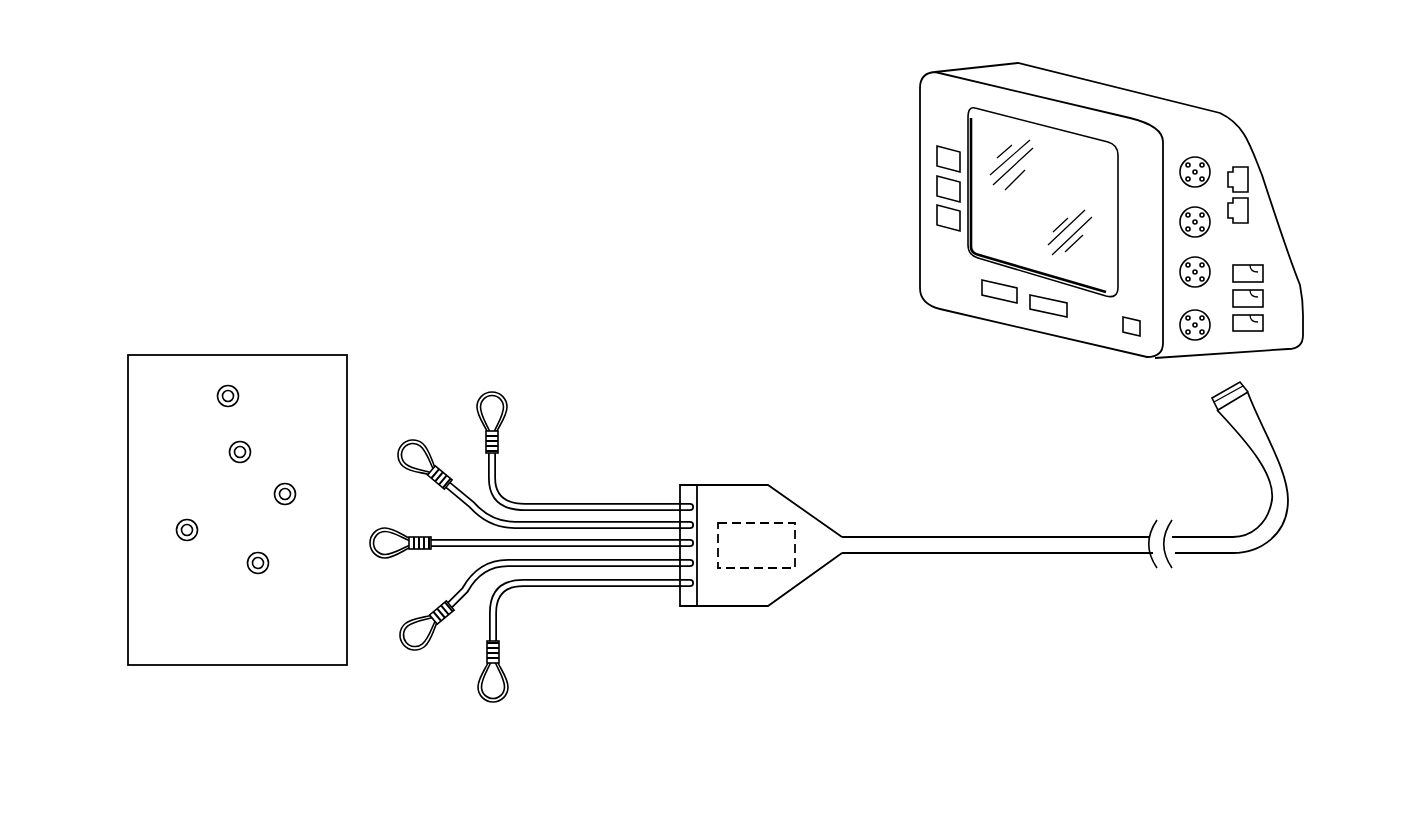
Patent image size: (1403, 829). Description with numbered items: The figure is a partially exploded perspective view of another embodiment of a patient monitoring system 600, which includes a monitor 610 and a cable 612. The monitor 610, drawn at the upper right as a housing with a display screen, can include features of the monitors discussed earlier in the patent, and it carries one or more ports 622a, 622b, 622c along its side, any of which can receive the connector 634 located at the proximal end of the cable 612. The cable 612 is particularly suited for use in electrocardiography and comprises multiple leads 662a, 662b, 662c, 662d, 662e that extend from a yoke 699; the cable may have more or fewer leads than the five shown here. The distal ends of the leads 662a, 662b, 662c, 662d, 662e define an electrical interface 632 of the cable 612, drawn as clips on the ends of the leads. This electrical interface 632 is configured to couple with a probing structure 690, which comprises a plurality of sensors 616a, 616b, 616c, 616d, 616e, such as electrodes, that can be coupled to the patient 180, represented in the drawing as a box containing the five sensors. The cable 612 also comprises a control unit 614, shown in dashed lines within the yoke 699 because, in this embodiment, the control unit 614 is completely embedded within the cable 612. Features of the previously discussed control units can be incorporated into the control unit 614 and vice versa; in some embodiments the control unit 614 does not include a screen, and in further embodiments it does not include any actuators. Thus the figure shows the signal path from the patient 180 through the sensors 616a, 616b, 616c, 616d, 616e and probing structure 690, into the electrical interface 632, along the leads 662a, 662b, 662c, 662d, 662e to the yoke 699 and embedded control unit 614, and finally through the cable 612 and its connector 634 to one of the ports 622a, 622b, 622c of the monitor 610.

The patient monitoring system 600 is at (304, 228).
The monitor 610 is at (1150, 72).
The cable 612 is at (1236, 575).
The control unit 614 is at (748, 538).
The port 622a is at (1263, 268).
The port 622b is at (1263, 297).
The port 622c is at (1263, 322).
The electrical interface 632 is at (507, 372).
The connector 634 is at (1243, 385).
The lead 662a is at (492, 407).
The lead 662b is at (415, 452).
The lead 662c is at (385, 548).
The lead 662d is at (415, 637).
The lead 662e is at (493, 690).
The probing structure 690 is at (262, 332).
The yoke 699 is at (713, 464).
The sensor 616a is at (228, 384).
The sensor 616b is at (230, 452).
The sensor 616c is at (275, 493).
The sensor 616d is at (177, 530).
The sensor 616e is at (247, 565).
The patient 180 is at (255, 656).